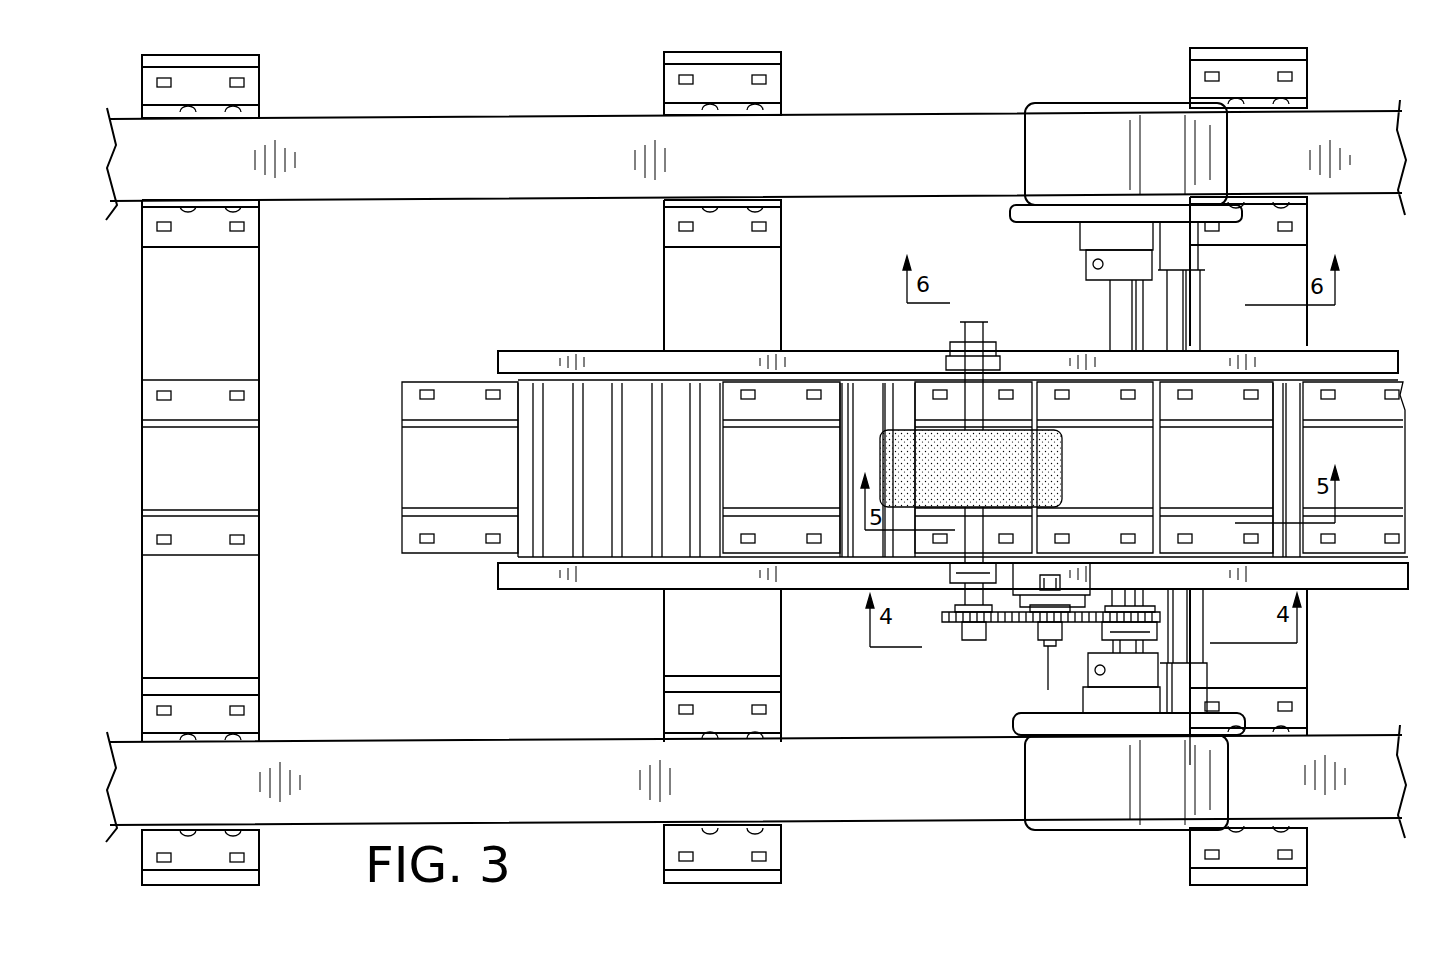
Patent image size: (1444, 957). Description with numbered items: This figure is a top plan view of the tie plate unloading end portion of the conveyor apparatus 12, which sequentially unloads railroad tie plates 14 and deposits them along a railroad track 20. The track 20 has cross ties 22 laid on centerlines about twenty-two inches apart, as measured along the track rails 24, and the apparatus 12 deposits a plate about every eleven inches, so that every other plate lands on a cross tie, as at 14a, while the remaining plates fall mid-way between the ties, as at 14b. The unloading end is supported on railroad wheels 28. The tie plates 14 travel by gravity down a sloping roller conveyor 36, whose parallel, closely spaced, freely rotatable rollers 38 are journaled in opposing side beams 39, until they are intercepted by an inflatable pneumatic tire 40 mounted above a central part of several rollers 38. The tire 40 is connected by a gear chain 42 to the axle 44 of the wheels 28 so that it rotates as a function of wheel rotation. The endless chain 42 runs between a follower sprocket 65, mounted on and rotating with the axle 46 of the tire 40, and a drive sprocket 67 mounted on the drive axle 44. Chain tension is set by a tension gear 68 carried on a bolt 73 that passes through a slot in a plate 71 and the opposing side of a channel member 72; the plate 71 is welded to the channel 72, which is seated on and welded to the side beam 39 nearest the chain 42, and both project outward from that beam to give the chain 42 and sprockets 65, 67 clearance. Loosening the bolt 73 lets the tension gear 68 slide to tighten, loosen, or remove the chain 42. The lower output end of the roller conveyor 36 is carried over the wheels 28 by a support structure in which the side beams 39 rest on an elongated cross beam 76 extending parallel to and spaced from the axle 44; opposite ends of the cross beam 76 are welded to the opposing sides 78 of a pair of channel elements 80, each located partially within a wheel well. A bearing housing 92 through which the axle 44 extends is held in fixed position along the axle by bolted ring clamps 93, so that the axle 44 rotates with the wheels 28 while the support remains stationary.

The conveyor apparatus 12 is at (805, 348).
The railroad tie plates 14 is at (1385, 456).
The tie plate on cross-tie 14a is at (220, 380).
The tie plate between ties 14b is at (460, 380).
The railroad track 20 is at (258, 655).
The cross ties 22 is at (258, 285).
The track rails 24 is at (420, 175).
The railroad wheels 28 is at (1090, 113).
The gravity feed roller conveyor 36 is at (1360, 588).
The rollers 38 is at (563, 390).
The side beams 39 is at (590, 355).
The inflatable pneumatic tire 40 is at (1062, 471).
The gear chain 42 is at (952, 625).
The axle 44 is at (1115, 328).
The axle 46 is at (955, 385).
The follower sprocket 65 is at (965, 625).
The drive sprocket 67 is at (1160, 617).
The tension gear 68 is at (1023, 625).
The plate 71 is at (945, 602).
The channel member 72 is at (1085, 576).
The bolt 73 is at (1048, 646).
The cross beam 76 is at (1200, 297).
The opposing sides 78 is at (1195, 765).
The channel elements 80 is at (1180, 713).
The bearing housing 92 is at (1095, 235).
The bolted ring clamps 93 is at (1125, 262).